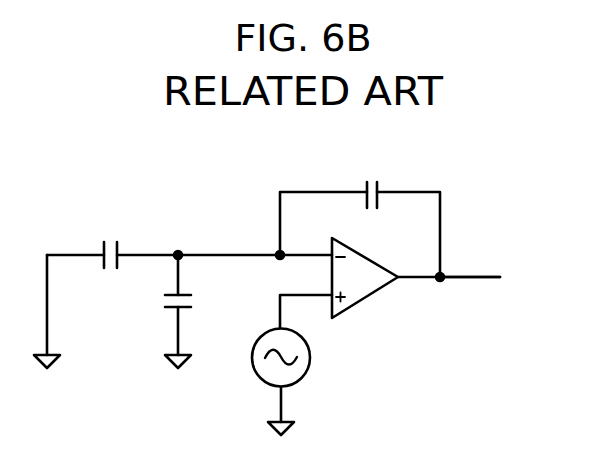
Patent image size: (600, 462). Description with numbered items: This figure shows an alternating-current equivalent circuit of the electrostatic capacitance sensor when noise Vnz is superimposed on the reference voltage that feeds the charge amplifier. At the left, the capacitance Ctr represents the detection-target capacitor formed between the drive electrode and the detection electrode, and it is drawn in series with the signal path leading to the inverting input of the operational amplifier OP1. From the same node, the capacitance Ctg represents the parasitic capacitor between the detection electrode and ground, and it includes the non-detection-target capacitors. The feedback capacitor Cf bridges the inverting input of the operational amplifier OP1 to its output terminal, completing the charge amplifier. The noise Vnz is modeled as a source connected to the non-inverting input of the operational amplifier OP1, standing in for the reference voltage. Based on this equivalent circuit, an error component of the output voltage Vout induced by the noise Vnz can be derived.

The electrostatic capacitance of the detection-target capacitor Ctr is at (108, 237).
The electrostatic capacitance of the parasitic capacitor Ctg is at (194, 298).
The feedback capacitor Cf is at (368, 172).
The operational amplifier OP1 is at (362, 255).
The noise Vnz is at (308, 350).
The voltage Vout is at (500, 280).